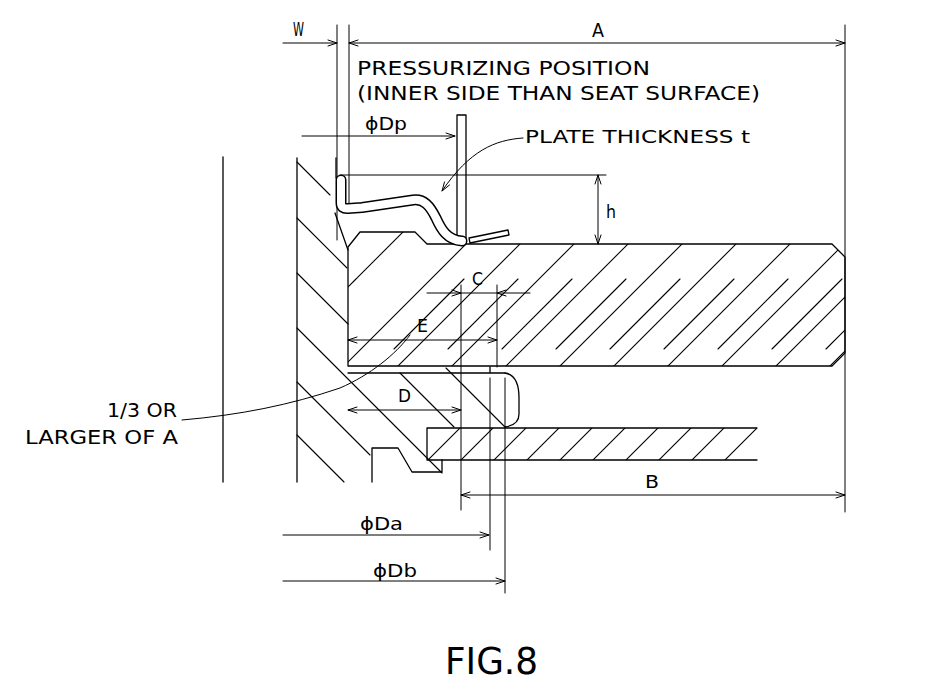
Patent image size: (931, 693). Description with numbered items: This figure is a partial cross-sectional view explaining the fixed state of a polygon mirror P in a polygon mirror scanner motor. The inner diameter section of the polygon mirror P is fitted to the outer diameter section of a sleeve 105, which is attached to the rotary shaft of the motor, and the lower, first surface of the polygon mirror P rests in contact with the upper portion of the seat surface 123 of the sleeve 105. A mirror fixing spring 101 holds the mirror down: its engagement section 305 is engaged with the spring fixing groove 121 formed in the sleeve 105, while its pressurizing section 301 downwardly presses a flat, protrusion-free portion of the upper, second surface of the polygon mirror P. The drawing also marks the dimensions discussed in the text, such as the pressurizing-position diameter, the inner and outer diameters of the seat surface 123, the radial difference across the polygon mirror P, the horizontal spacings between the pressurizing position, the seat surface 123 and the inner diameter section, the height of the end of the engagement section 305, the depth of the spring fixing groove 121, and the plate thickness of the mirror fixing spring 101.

The mirror fixing spring 101 is at (430, 206).
The sleeve 105 is at (312, 336).
The spring fixing groove 121 is at (343, 185).
The seat surface 123 is at (513, 376).
The pressurizing section 301 is at (509, 233).
The engagement section 305 is at (336, 176).
The polygon mirror P is at (751, 257).